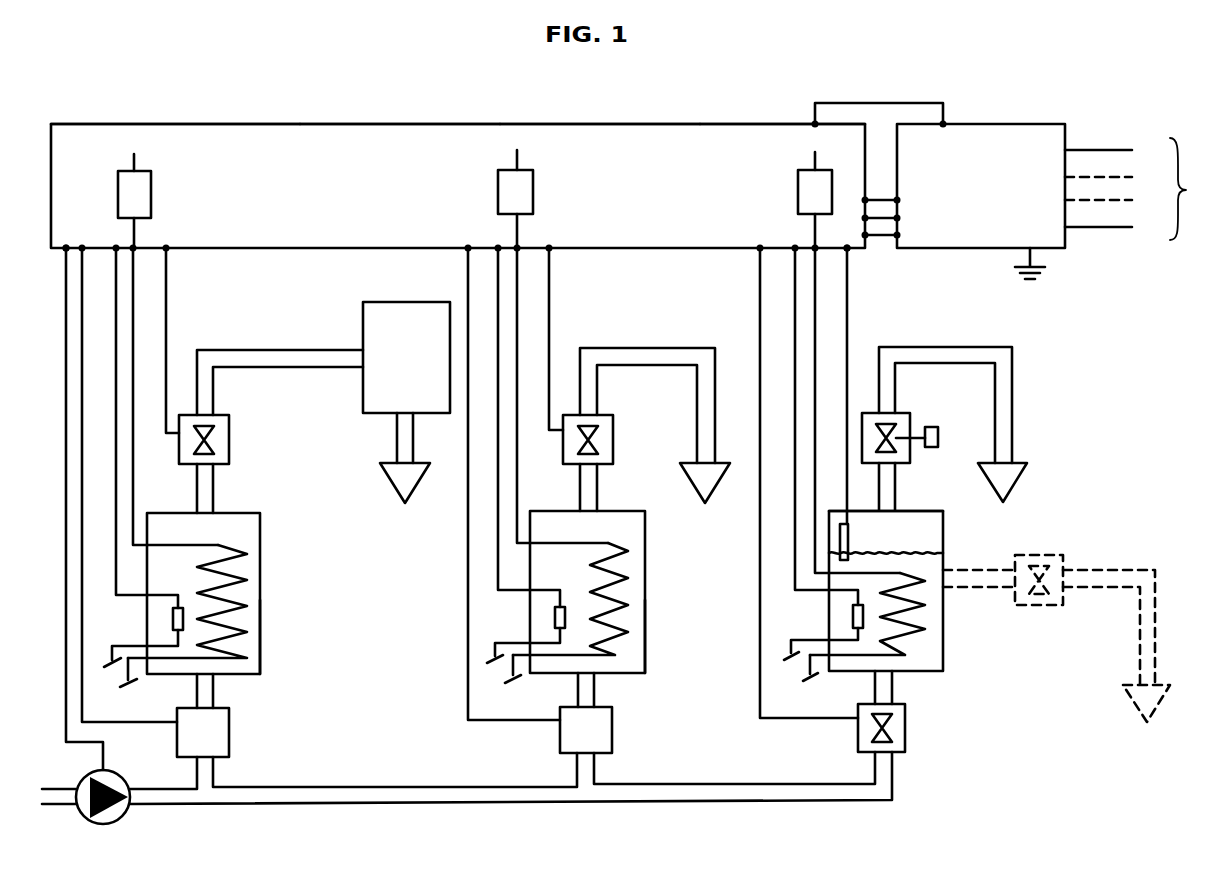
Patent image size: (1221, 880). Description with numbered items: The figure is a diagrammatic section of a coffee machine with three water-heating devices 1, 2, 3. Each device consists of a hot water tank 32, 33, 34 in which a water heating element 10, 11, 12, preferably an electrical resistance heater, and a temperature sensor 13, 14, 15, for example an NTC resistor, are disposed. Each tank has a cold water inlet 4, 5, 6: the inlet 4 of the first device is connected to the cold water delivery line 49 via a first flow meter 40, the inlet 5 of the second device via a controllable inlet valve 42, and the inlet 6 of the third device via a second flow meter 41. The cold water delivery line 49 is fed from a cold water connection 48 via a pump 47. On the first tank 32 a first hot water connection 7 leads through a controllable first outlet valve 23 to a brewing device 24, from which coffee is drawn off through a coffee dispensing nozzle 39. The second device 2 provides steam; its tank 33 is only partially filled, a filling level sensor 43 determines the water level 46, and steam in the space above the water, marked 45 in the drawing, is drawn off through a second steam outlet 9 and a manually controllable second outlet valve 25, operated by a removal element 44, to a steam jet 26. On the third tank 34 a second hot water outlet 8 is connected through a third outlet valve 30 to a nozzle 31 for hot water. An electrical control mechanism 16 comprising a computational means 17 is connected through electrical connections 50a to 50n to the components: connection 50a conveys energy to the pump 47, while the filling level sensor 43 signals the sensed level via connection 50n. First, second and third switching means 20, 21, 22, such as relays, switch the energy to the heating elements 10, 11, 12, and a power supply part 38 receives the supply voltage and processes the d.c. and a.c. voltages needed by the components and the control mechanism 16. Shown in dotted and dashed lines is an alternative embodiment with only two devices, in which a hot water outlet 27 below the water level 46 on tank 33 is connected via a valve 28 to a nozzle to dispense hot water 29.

The first water-heating device 1 is at (270, 534).
The second water-heating device 2 is at (990, 538).
The third water-heating device 3 is at (658, 550).
The cold water inlet 4 is at (208, 680).
The cold water inlet 5 is at (893, 680).
The cold water inlet 6 is at (595, 680).
The first hot water connection 7 is at (213, 508).
The second hot water outlet 8 is at (597, 508).
The second steam outlet 9 is at (890, 505).
The water heating element 10 is at (235, 572).
The water heating element 11 is at (928, 642).
The water heating element 12 is at (617, 592).
The temperature sensor 13 is at (183, 613).
The temperature sensor 14 is at (930, 620).
The temperature sensor 15 is at (567, 615).
The electrical control mechanism 16 is at (459, 120).
The computational means 17 is at (283, 135).
The first switching means 20 is at (151, 190).
The second switching means 21 is at (798, 192).
The third switching means 22 is at (533, 195).
The first outlet valve 23 is at (230, 428).
The brewing device 24 is at (400, 312).
The second outlet valve 25 is at (905, 418).
The steam jet 26 is at (1005, 478).
The hot water outlet 27 is at (945, 580).
The valve 28 is at (1053, 555).
The nozzle to dispense hot water 29 is at (1162, 700).
The third outlet valve 30 is at (613, 428).
The nozzle 31 is at (700, 482).
The hot water tank 32 is at (263, 638).
The hot water tank 33 is at (847, 673).
The hot water tank 34 is at (645, 653).
The power supply part 38 is at (1012, 130).
The coffee dispensing nozzle 39 is at (398, 478).
The first flow meter 40 is at (229, 742).
The second flow meter 41 is at (612, 740).
The inlet valve 42 is at (905, 737).
The filling level sensor 43 is at (849, 543).
The removal element 44 is at (940, 435).
The water level 45 is at (955, 530).
The water level 46 is at (920, 552).
The pump 47 is at (108, 815).
The cold water connection 48 is at (58, 803).
The cold water delivery line 49 is at (367, 796).
The electrical connection 50a is at (66, 250).
The electrical connection 50n is at (850, 250).